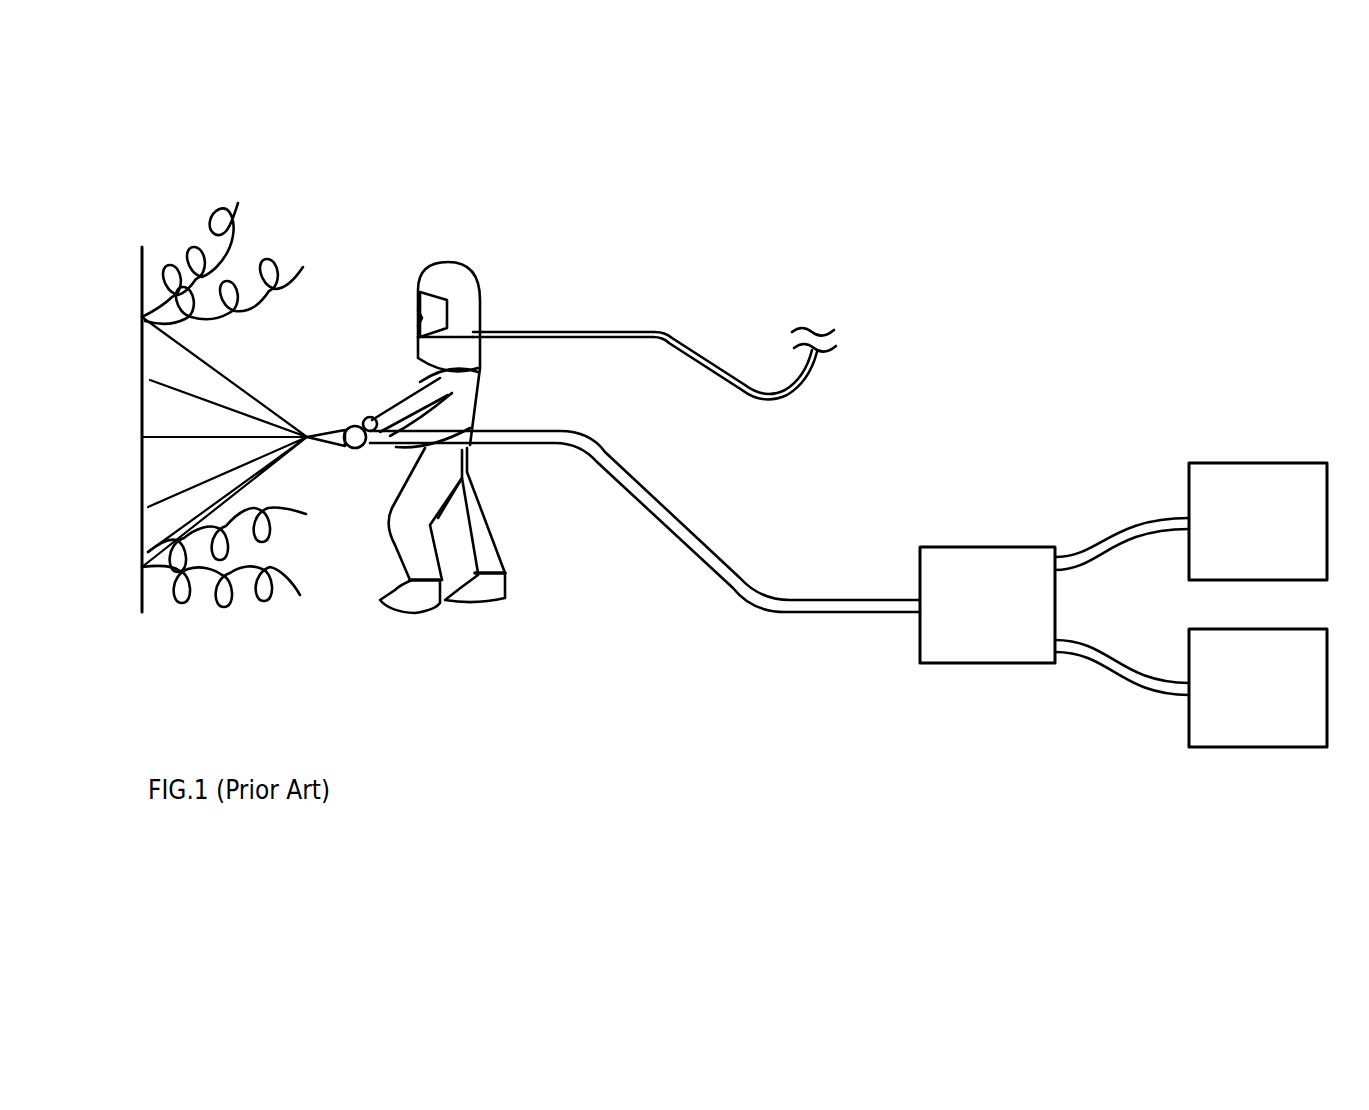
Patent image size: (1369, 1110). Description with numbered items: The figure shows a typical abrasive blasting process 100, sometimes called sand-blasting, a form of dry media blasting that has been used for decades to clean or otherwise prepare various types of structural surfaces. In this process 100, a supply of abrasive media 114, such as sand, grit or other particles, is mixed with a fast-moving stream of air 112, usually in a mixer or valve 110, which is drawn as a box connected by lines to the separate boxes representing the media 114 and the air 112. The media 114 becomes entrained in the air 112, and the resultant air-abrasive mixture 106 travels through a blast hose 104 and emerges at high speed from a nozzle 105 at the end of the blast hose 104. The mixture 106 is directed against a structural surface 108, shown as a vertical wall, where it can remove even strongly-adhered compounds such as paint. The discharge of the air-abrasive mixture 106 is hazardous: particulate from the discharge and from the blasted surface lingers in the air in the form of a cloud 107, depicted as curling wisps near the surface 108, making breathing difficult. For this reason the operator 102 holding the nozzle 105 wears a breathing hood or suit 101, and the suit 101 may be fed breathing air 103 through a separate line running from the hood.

The abrasive blasting process 100 is at (168, 207).
The breathing hood or suit 101 is at (462, 262).
The operator 102 is at (470, 407).
The breathing air 103 is at (661, 341).
The blast hose 104 is at (665, 527).
The nozzle 105 is at (328, 430).
The air-abrasive mixture 106 is at (263, 402).
The cloud 107 is at (227, 227).
The structural surface 108 is at (142, 333).
The mixer or valve 110 is at (967, 666).
The stream of air 112 is at (1230, 460).
The supply of abrasive media 114 is at (1222, 750).